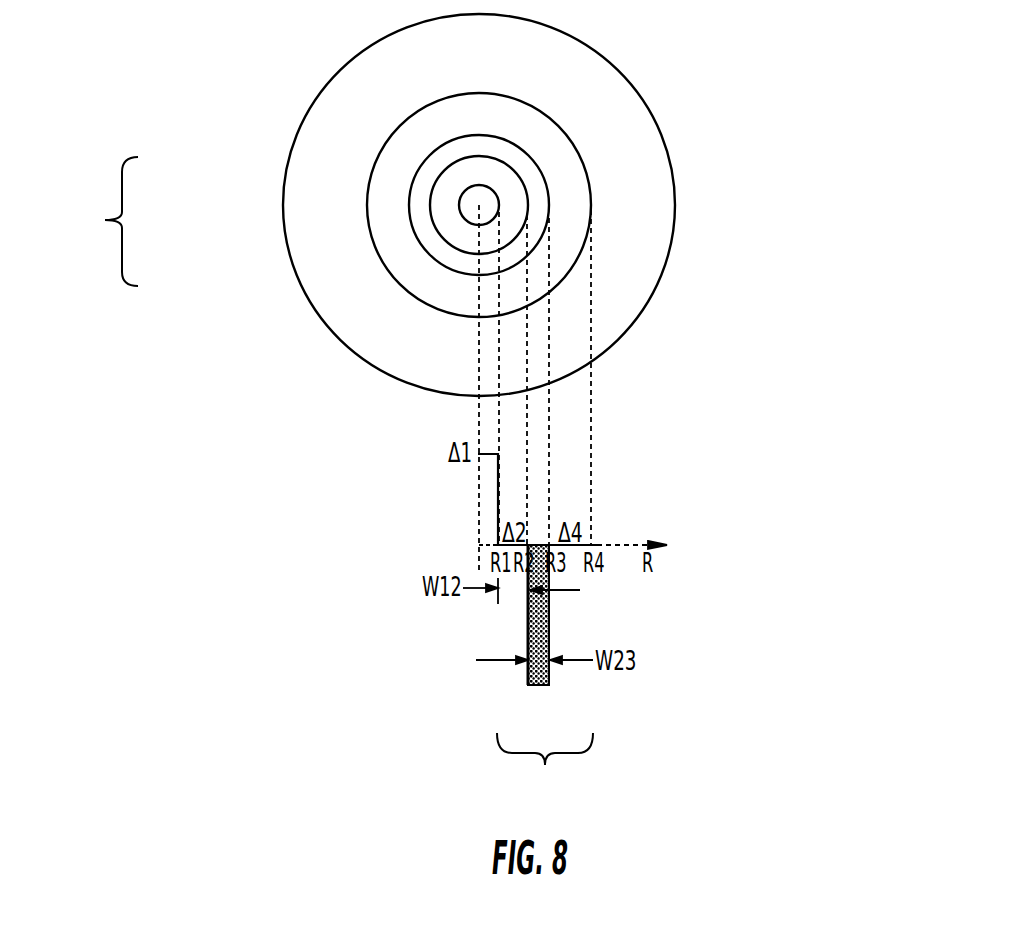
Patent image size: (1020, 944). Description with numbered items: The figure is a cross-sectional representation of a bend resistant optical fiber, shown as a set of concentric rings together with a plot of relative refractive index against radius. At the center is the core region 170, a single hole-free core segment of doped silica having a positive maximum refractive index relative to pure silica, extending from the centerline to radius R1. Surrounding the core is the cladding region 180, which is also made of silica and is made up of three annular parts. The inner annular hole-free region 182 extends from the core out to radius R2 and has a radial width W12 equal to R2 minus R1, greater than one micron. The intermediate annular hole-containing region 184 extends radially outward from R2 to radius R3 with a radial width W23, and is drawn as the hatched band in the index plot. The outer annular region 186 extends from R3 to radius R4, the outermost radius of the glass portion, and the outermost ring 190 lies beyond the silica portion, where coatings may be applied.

The core region 170 is at (472, 209).
The cladding region 180 is at (327, 480).
The inner annular hole-free region 182 is at (443, 202).
The intermediate annular hole-containing region 184 is at (422, 191).
The outer annular region 186 is at (400, 162).
The outer cladding 190 is at (615, 218).